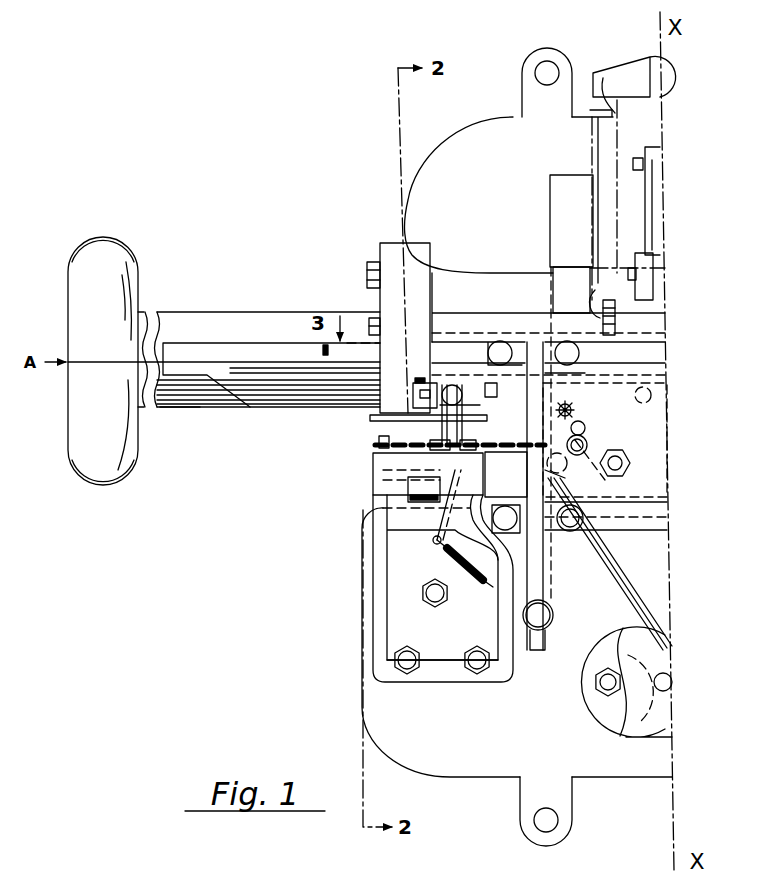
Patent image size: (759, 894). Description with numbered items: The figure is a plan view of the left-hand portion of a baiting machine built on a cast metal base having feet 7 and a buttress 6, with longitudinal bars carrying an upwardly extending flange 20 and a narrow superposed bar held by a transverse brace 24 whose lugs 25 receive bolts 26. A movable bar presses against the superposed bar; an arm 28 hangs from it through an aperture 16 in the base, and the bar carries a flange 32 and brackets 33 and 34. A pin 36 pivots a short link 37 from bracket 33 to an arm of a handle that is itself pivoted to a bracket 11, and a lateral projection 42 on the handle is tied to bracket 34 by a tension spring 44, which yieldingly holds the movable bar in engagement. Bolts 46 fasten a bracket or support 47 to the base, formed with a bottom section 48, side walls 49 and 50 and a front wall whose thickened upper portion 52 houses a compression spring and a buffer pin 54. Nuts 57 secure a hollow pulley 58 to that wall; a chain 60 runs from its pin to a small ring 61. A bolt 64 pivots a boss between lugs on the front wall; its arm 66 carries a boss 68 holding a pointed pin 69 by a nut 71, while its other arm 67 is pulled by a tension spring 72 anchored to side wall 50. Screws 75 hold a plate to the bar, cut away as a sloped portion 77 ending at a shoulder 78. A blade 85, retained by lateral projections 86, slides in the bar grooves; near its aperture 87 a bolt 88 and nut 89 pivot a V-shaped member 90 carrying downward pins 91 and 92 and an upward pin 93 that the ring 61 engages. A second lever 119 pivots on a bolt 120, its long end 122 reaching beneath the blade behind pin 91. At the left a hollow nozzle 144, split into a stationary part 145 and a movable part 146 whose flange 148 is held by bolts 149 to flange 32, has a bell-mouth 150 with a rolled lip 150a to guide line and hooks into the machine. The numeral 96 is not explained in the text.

The buttress 6 is at (538, 650).
The feet 7 is at (549, 50).
The bracket 11 is at (638, 108).
The aperture 16 is at (556, 195).
The flange 20 is at (392, 383).
The transverse brace 24 is at (546, 585).
The lug 25 is at (503, 342).
The bolt 26 is at (506, 506).
The arm 28 is at (565, 275).
The flange 32 is at (410, 252).
The bracket 33 is at (645, 256).
The bracket 34 is at (602, 322).
The pin 36 is at (430, 383).
The short link 37 is at (417, 369).
The lateral projection 42 is at (620, 78).
The tension spring 44 is at (592, 128).
The bolt 46 is at (432, 595).
The bracket or support 47 is at (371, 598).
The bottom section 48 is at (460, 672).
The side wall 49 is at (374, 622).
The side wall 50 is at (499, 620).
The upper portion of front wall 52 is at (373, 478).
The buffer pin 54 is at (496, 478).
The nut 57 is at (425, 502).
The hollow pulley 58 is at (372, 418).
The chain 60 is at (500, 446).
The ring 61 is at (585, 430).
The bolt 64 is at (450, 512).
The arm 66 is at (478, 440).
The arm 67 is at (435, 544).
The boss 68 is at (465, 412).
The pointed pin 69 is at (456, 386).
The nut 71 is at (465, 405).
The tension spring 72 is at (456, 581).
The screw 75 is at (647, 400).
The sloped portion 77 is at (583, 372).
The shoulder 78 is at (496, 390).
The blade 85 is at (659, 531).
The lateral projection 86 is at (549, 340).
The aperture 87 is at (588, 445).
The bolt 88 is at (629, 458).
The nut 89 is at (623, 466).
The V-shaped member 90 is at (596, 478).
The pin 91 is at (564, 485).
The pin 92 is at (571, 410).
The third pin 93 is at (573, 463).
The nut 96 is at (600, 690).
The second lever 119 is at (612, 710).
The bolt 120 is at (642, 730).
The end of lever 122 is at (598, 533).
The hollow nozzle 144 is at (215, 410).
The stationary nozzle part 145 is at (182, 408).
The movable nozzle part 146 is at (157, 318).
The flange 148 is at (370, 262).
The bolt or stud 149 is at (372, 318).
The bell-mouth 150 is at (68, 300).
The lip 150a is at (100, 238).